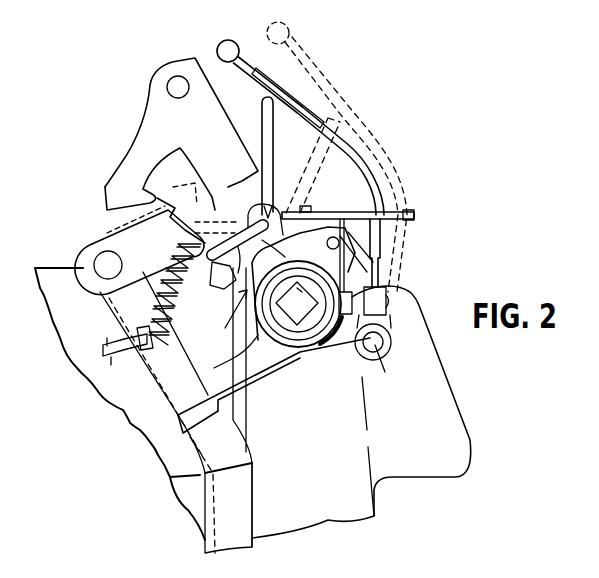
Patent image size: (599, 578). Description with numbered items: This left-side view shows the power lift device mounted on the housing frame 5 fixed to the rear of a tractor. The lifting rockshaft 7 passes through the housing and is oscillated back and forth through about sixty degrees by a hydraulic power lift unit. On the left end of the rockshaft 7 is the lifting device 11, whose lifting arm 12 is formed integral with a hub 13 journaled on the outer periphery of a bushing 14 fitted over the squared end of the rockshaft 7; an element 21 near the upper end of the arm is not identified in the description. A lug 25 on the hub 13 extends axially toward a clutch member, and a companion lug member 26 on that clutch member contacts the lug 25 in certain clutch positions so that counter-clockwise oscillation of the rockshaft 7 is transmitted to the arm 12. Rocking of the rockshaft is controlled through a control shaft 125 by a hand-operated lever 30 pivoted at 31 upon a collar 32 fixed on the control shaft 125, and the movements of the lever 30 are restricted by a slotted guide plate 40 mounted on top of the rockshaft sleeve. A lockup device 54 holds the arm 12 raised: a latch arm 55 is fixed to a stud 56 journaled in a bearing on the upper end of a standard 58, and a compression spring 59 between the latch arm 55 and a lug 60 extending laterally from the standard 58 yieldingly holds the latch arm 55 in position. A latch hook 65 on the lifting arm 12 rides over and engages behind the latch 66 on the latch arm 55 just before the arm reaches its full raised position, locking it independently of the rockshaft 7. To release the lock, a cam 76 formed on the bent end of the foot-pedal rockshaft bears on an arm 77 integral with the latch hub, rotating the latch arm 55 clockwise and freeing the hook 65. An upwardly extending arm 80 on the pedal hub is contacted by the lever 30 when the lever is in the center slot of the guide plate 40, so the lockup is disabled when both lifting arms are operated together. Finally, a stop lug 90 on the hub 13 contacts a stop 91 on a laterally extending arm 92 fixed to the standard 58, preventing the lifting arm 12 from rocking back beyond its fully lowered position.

The housing frame 5 is at (363, 506).
The lifting rockshaft 7 is at (298, 290).
The lifting device 11 is at (233, 407).
The lifting arm 12 is at (213, 142).
The hub 13 is at (281, 332).
The bushing 14 is at (313, 327).
The hole 21 is at (175, 76).
The lug 25 is at (338, 298).
The companion lug member 26 is at (386, 312).
The hand-operated lever 30 is at (340, 152).
The pivot 31 is at (387, 309).
The collar 32 is at (391, 342).
The guide plate 40 is at (334, 216).
The lockup device 54 is at (69, 293).
The latch arm 55 is at (143, 240).
The stud 56 is at (94, 259).
The standard 58 is at (227, 497).
The compression spring 59 is at (179, 294).
The lug 60 is at (143, 356).
The latch hook 65 is at (117, 181).
The latch 66 is at (176, 195).
The cam 76 is at (237, 228).
The arm 77 is at (218, 280).
The upwardly extending arm 80 is at (300, 160).
The stop lug 90 is at (387, 267).
The stop 91 is at (276, 372).
The laterally extending arm 92 is at (182, 438).
The control shaft 125 is at (392, 367).